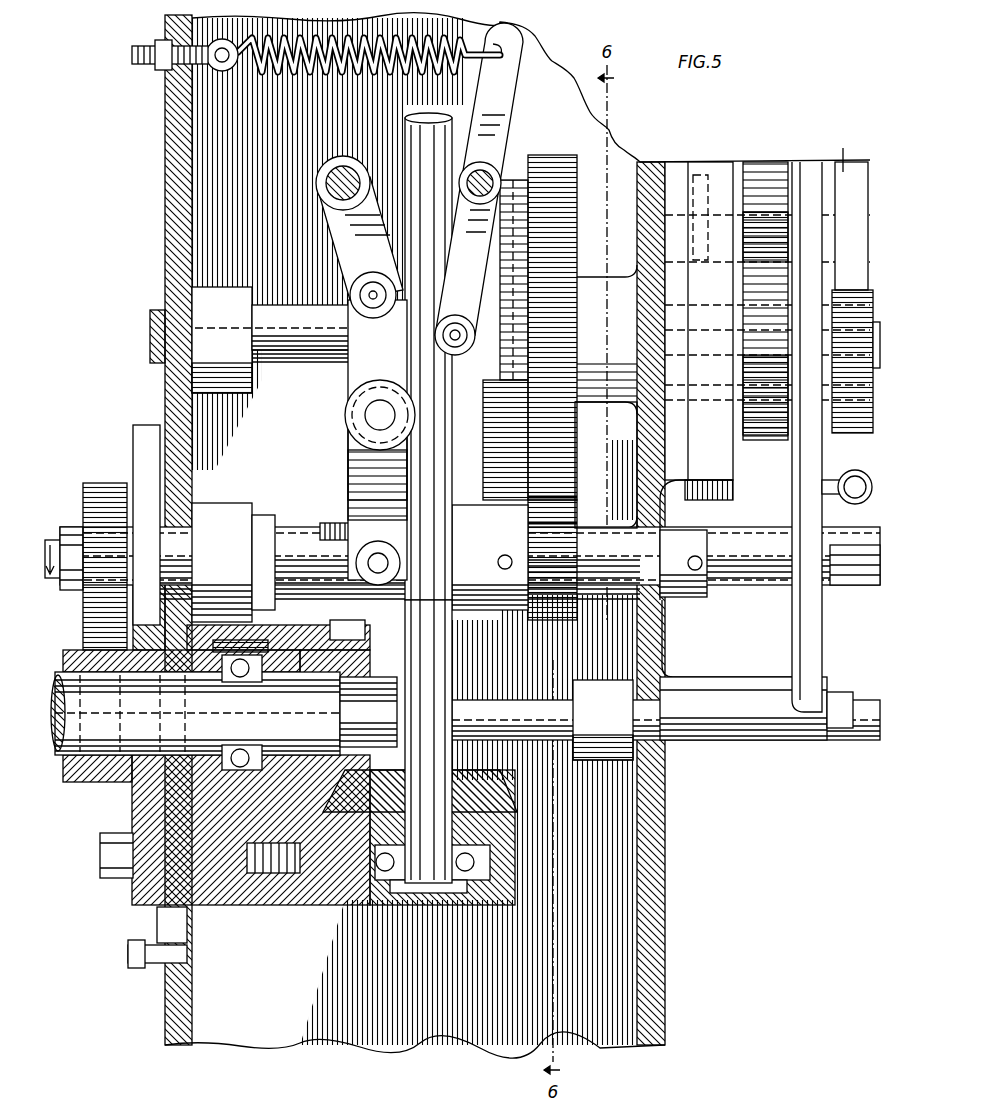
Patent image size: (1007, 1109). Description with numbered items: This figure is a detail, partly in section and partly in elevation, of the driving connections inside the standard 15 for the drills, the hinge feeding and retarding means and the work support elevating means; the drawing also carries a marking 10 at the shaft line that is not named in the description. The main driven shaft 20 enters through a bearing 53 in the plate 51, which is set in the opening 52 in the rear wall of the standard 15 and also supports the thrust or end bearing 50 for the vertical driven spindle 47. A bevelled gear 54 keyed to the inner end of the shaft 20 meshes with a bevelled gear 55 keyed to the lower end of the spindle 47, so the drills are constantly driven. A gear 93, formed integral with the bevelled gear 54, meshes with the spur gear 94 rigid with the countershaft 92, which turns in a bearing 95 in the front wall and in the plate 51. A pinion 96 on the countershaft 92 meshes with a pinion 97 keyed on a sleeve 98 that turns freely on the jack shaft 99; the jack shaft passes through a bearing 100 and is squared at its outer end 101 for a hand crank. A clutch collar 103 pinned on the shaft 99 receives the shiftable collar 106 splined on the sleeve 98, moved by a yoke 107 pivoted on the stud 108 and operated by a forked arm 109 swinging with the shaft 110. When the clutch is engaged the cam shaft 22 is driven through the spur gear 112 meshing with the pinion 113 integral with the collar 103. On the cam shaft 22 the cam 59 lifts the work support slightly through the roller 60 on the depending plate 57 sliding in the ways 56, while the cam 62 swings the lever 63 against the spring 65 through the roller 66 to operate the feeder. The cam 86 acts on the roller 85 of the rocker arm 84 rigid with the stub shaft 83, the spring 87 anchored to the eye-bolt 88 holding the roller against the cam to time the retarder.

The main shaft 10 is at (743, 560).
The standard 15 is at (178, 178).
The main driven shaft 20 is at (90, 760).
The cam shaft 22 is at (300, 350).
The vertical driven spindle 47 is at (370, 415).
The thrust or end bearing 50 is at (370, 880).
The plate 51 is at (195, 882).
The opening 52 is at (180, 928).
The bearing 53 is at (240, 676).
The bevelled gear 54 is at (428, 741).
The bevelled gear 55 is at (485, 790).
The ways 56 is at (722, 470).
The dovetailed depending plate 57 is at (722, 500).
The cam 59 is at (750, 390).
The roller 60 is at (780, 240).
The cam 62 is at (848, 206).
The lever 63 is at (818, 635).
The spring 65 is at (845, 495).
The roller 66 is at (870, 420).
The stub shaft 83 is at (490, 175).
The rocker arm 84 is at (452, 258).
The roller 85 is at (458, 355).
The cam 86 is at (486, 448).
The spring 87 is at (476, 179).
The eye-bolt 88 is at (200, 62).
The countershaft 92 is at (535, 700).
The gear 93 is at (300, 880).
The spur gear 94 is at (298, 585).
The bearing 95 is at (662, 655).
The pinion 96 is at (110, 790).
The pinion 97 is at (104, 483).
The sleeve 98 is at (218, 530).
The jack shaft 99 is at (757, 585).
The bearing 100 is at (590, 525).
The squared end 101 is at (845, 548).
The clutch collar 103 is at (480, 612).
The shiftable collar 106 is at (350, 625).
The yoke 107 is at (350, 473).
The stud 108 is at (368, 427).
The forked arm 109 is at (345, 245).
The shaft 110 is at (355, 178).
The spur gear 112 is at (565, 225).
The pinion 113 is at (560, 563).